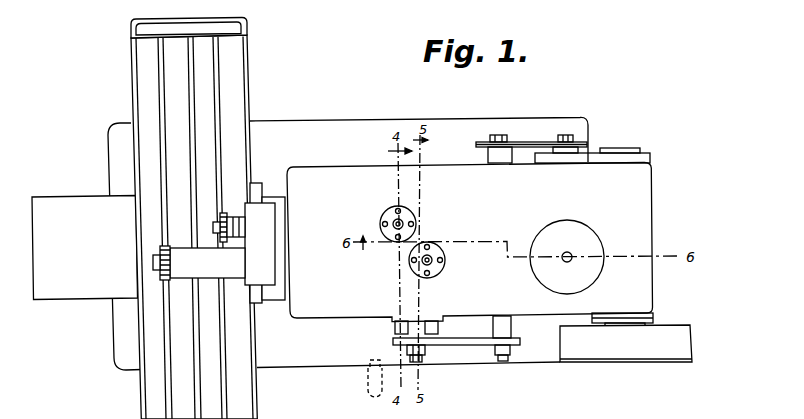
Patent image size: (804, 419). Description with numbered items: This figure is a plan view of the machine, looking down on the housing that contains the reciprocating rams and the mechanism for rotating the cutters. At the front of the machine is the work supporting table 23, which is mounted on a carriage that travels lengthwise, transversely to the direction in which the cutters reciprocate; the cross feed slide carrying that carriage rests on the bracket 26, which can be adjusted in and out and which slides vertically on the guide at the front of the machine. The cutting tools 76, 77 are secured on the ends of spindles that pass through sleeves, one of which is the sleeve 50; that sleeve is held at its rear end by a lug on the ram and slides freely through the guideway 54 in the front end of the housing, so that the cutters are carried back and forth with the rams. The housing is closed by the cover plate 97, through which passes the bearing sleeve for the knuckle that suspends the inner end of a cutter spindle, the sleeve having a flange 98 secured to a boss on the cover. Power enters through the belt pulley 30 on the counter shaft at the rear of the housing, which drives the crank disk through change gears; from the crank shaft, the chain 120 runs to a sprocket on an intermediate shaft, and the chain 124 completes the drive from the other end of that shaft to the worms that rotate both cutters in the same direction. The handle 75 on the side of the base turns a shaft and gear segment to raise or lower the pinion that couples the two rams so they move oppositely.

The work supporting table 23 is at (147, 413).
The bracket 26 is at (85, 248).
The belt pulley 30 is at (626, 337).
The sleeve 50 is at (207, 263).
The guideway 54 is at (262, 265).
The handle 75 is at (368, 386).
The cutting tool 76 is at (165, 280).
The cutting tool 77 is at (222, 211).
The cover plate 97 is at (317, 195).
The flange 98 is at (389, 214).
The chain 120 is at (524, 143).
The chain 124 is at (468, 346).